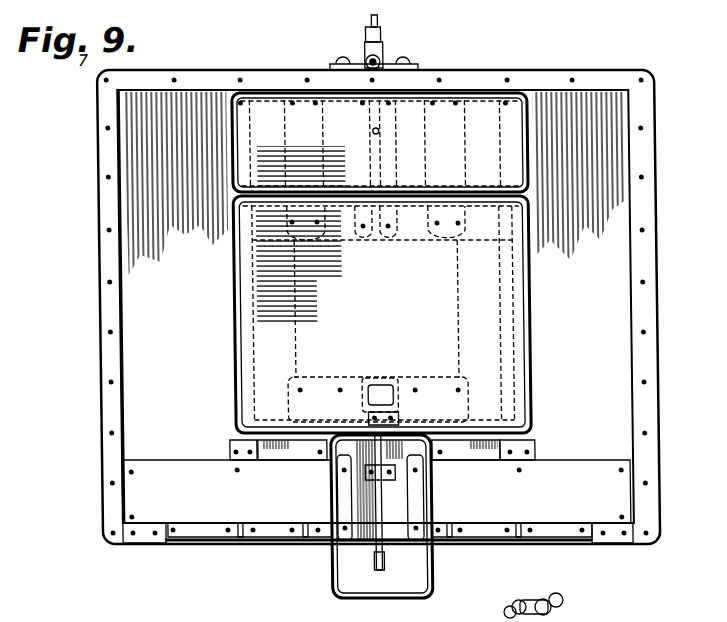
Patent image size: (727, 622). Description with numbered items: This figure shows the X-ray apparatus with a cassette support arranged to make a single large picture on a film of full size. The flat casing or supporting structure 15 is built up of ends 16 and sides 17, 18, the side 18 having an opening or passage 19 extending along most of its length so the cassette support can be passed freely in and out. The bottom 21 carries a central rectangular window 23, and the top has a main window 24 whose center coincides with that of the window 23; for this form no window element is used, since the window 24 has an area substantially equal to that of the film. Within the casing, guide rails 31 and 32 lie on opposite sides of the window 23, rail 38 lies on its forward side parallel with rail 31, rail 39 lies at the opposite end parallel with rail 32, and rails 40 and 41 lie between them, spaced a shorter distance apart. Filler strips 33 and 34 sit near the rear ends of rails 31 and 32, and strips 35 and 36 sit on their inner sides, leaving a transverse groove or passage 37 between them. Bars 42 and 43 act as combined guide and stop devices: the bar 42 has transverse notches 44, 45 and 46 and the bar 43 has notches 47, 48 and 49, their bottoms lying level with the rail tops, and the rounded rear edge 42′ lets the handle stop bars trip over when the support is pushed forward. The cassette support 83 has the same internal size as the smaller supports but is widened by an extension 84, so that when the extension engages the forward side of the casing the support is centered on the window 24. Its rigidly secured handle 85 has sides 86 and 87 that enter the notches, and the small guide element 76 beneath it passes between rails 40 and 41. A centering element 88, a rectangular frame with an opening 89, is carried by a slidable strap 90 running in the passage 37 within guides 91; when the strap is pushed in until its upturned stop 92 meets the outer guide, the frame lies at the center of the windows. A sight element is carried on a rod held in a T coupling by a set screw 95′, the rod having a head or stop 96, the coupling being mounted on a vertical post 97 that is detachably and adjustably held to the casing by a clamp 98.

The supporting structure or casing 15 is at (663, 353).
The ends 16 is at (102, 316).
The side 17 is at (203, 78).
The side 18 is at (146, 538).
The opening or passage 19 is at (164, 540).
The bottom 21 is at (572, 286).
The window 23 is at (301, 353).
The main window 24 is at (299, 272).
The guide element or rail 31 is at (579, 176).
The guide element or rail 32 is at (224, 190).
The filler element or strip 33 is at (568, 472).
The filler element or strip 34 is at (165, 472).
The filler element or strip 35 is at (450, 452).
The filler element or strip 36 is at (297, 452).
The groove or passage 37 is at (360, 536).
The guide element or rail 38 is at (457, 179).
The guide element or rail 39 is at (303, 178).
The guide element or rail 40 is at (384, 216).
The guide element or rail 41 is at (359, 215).
The bar 42 is at (549, 530).
The rear rounded edge 42′ is at (262, 540).
The bar 43 is at (184, 530).
The transverse notch or groove 44 is at (512, 525).
The transverse notch or groove 45 is at (443, 525).
The transverse notch or groove 46 is at (432, 540).
The transverse notch or groove 47 is at (235, 525).
The transverse notch or groove 48 is at (299, 525).
The transverse notch or groove 49 is at (314, 540).
The guide element 76 is at (379, 131).
The cassette support 83 is at (512, 358).
The extension 84 is at (491, 98).
The handle 85 is at (383, 598).
The side 86 is at (423, 502).
The side 87 is at (330, 482).
The centering element 88 is at (368, 378).
The rectangular opening 89 is at (380, 392).
The slidable strap or bar 90 is at (378, 560).
The guides 91 is at (394, 420).
The stop 92 is at (368, 566).
The set screw 95′ is at (505, 606).
The head or stop 96 is at (550, 607).
The vertical post 97 is at (381, 60).
The clamp 98 is at (380, 33).